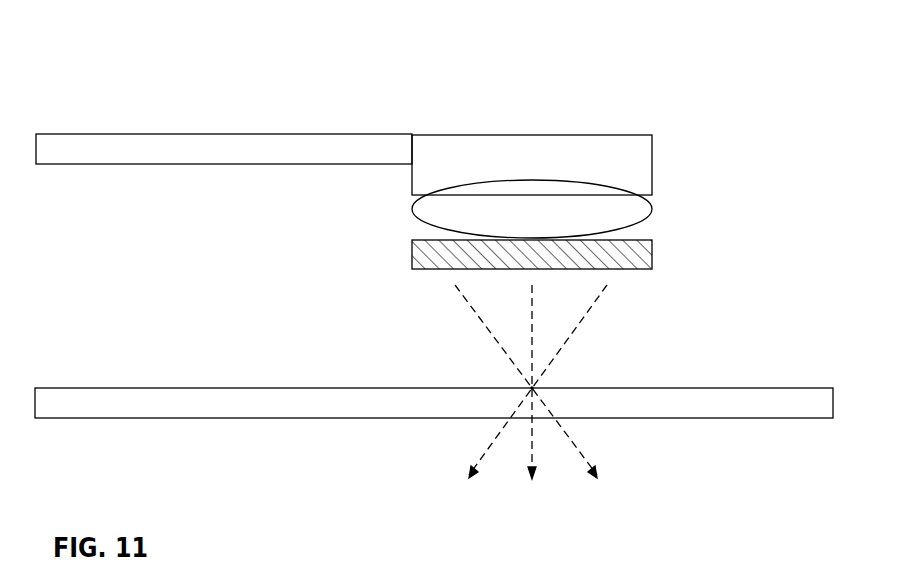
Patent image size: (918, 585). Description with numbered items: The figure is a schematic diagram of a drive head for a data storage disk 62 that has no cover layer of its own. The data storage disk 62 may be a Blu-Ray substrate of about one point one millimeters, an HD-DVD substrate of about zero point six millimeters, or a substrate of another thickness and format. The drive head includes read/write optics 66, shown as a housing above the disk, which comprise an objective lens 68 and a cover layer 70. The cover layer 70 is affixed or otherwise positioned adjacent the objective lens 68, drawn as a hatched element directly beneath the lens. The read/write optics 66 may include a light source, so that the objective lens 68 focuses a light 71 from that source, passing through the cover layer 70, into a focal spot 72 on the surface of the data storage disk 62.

The data storage disk 62 is at (260, 400).
The read/write optics 66 is at (578, 118).
The objective lens 68 is at (654, 212).
The cover layer 70 is at (418, 255).
The light 71 is at (593, 343).
The focal spot 72 is at (546, 388).